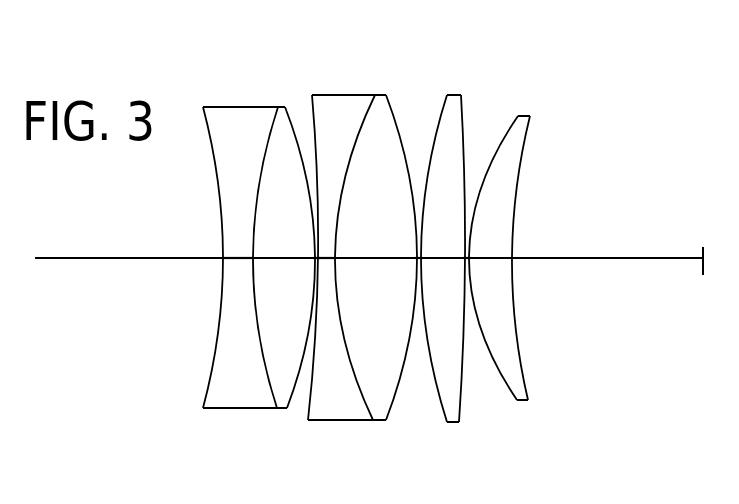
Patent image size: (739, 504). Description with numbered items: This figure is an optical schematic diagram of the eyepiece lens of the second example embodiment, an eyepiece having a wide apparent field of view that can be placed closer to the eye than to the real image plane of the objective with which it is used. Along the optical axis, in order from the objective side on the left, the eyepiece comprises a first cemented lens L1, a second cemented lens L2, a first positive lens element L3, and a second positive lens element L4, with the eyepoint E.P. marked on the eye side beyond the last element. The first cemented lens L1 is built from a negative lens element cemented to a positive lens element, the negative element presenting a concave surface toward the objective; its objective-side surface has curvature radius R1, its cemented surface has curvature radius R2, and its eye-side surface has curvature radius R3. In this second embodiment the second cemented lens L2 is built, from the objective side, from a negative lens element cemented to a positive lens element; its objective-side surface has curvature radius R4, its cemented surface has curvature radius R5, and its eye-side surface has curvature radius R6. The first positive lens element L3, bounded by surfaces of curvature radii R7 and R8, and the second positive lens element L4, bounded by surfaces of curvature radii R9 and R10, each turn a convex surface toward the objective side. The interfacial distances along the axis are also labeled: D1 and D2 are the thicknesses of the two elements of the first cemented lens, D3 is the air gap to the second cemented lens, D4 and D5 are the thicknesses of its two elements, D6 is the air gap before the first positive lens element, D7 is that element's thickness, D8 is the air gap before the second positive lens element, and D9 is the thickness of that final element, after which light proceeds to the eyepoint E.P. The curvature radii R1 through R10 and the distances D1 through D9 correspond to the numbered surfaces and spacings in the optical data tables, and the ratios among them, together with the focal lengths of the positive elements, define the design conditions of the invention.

The curvature radius of objective-side surface of first cemented lens R1 is at (205, 119).
The curvature radius of cemented surface of first cemented lens R2 is at (272, 124).
The curvature radius of eye-side surface of first cemented lens R3 is at (295, 125).
The curvature radius of objective-side surface of second cemented lens R4 is at (313, 112).
The curvature radius of cemented surface of second cemented lens R5 is at (373, 101).
The curvature radius of lens surface R6 is at (393, 112).
The curvature radius of lens surface R7 is at (441, 110).
The curvature radius of lens surface R8 is at (462, 110).
The curvature radius of lens surface R9 is at (510, 128).
The curvature radius of lens surface R10 is at (525, 141).
The interfacial distance D1 is at (237, 256).
The interfacial distance D2 is at (273, 256).
The interfacial distance D3 is at (315, 262).
The interfacial distance D4 is at (321, 262).
The interfacial distance D5 is at (368, 256).
The interfacial distance D6 is at (419, 262).
The interfacial distance D7 is at (437, 257).
The interfacial distance D8 is at (468, 262).
The interfacial distance D9 is at (490, 256).
The first cemented lens L1 is at (255, 247).
The second cemented lens L2 is at (361, 246).
The first positive lens element L3 is at (448, 250).
The second positive lens element L4 is at (527, 260).
The eyepoint E.P. is at (704, 242).